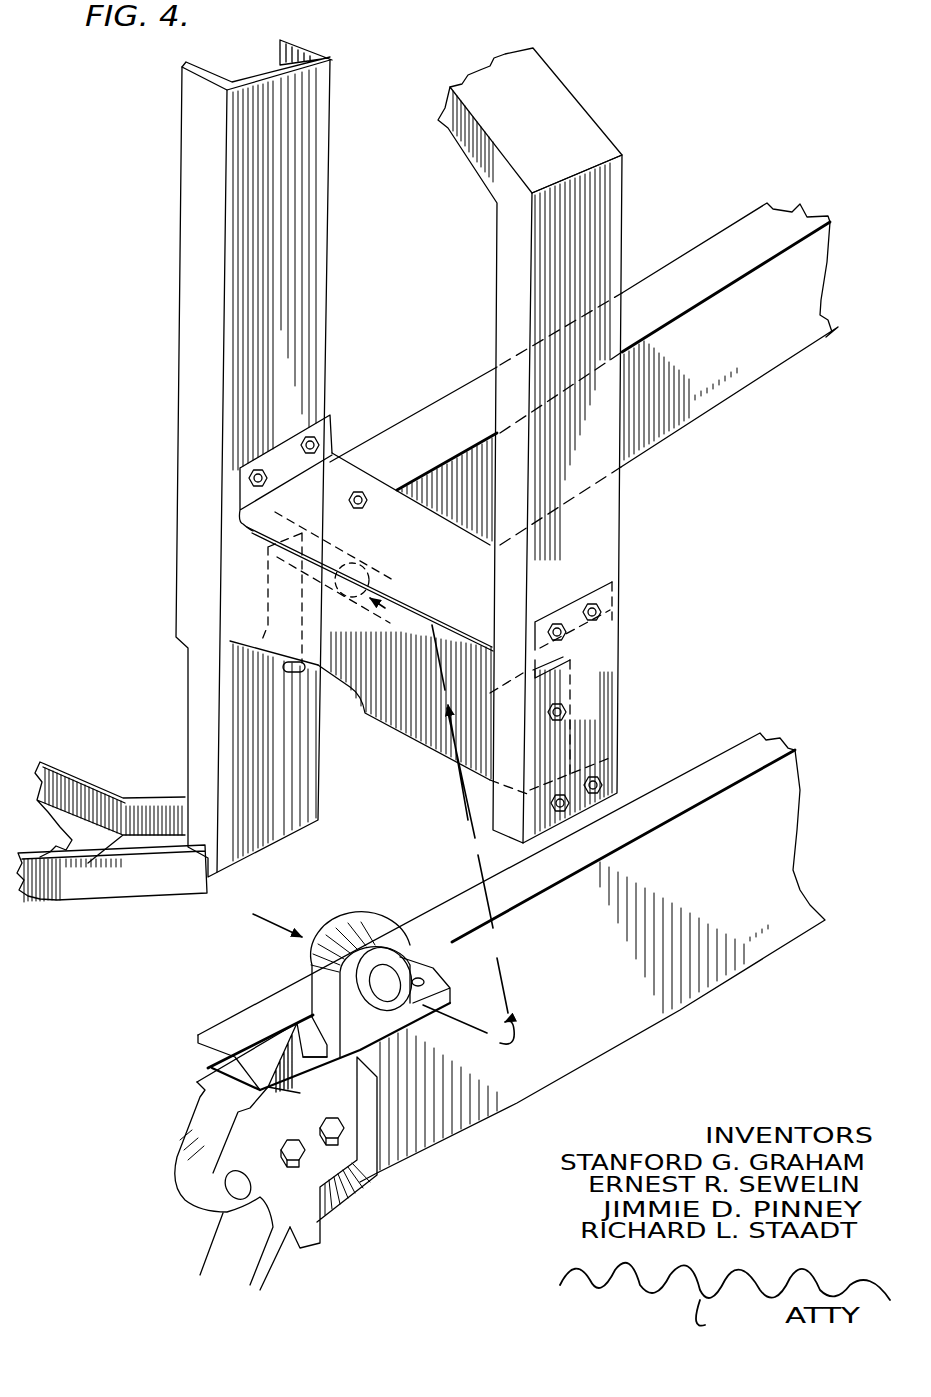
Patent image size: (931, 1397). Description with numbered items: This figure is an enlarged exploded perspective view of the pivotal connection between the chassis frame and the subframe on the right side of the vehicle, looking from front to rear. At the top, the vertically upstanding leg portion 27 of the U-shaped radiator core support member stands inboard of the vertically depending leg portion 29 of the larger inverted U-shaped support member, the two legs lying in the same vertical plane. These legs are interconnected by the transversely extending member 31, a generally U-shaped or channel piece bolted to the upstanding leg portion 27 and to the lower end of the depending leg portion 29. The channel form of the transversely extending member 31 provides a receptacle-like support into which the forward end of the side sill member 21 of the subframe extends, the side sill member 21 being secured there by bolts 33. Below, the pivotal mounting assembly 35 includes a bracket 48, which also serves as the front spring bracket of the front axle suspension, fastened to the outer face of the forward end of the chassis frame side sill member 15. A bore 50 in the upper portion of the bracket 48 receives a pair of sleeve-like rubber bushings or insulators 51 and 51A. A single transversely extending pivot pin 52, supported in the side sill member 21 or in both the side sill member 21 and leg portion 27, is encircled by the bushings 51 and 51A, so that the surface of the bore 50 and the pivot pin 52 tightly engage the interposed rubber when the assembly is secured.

The chassis frame side sill member 15 is at (707, 765).
The side sill member 21 is at (657, 410).
The upstanding leg portion 27 is at (298, 196).
The depending leg portion 29 is at (590, 206).
The transversely extending member 31 is at (397, 718).
The bolts 33 is at (360, 508).
The pivotal mounting assembly 35 is at (335, 690).
The bracket 48 is at (295, 1188).
The bore 50 is at (384, 960).
The resilient bushing 51 is at (383, 1005).
The resilient bushing 51A is at (333, 945).
The pivot pin 52 is at (376, 558).